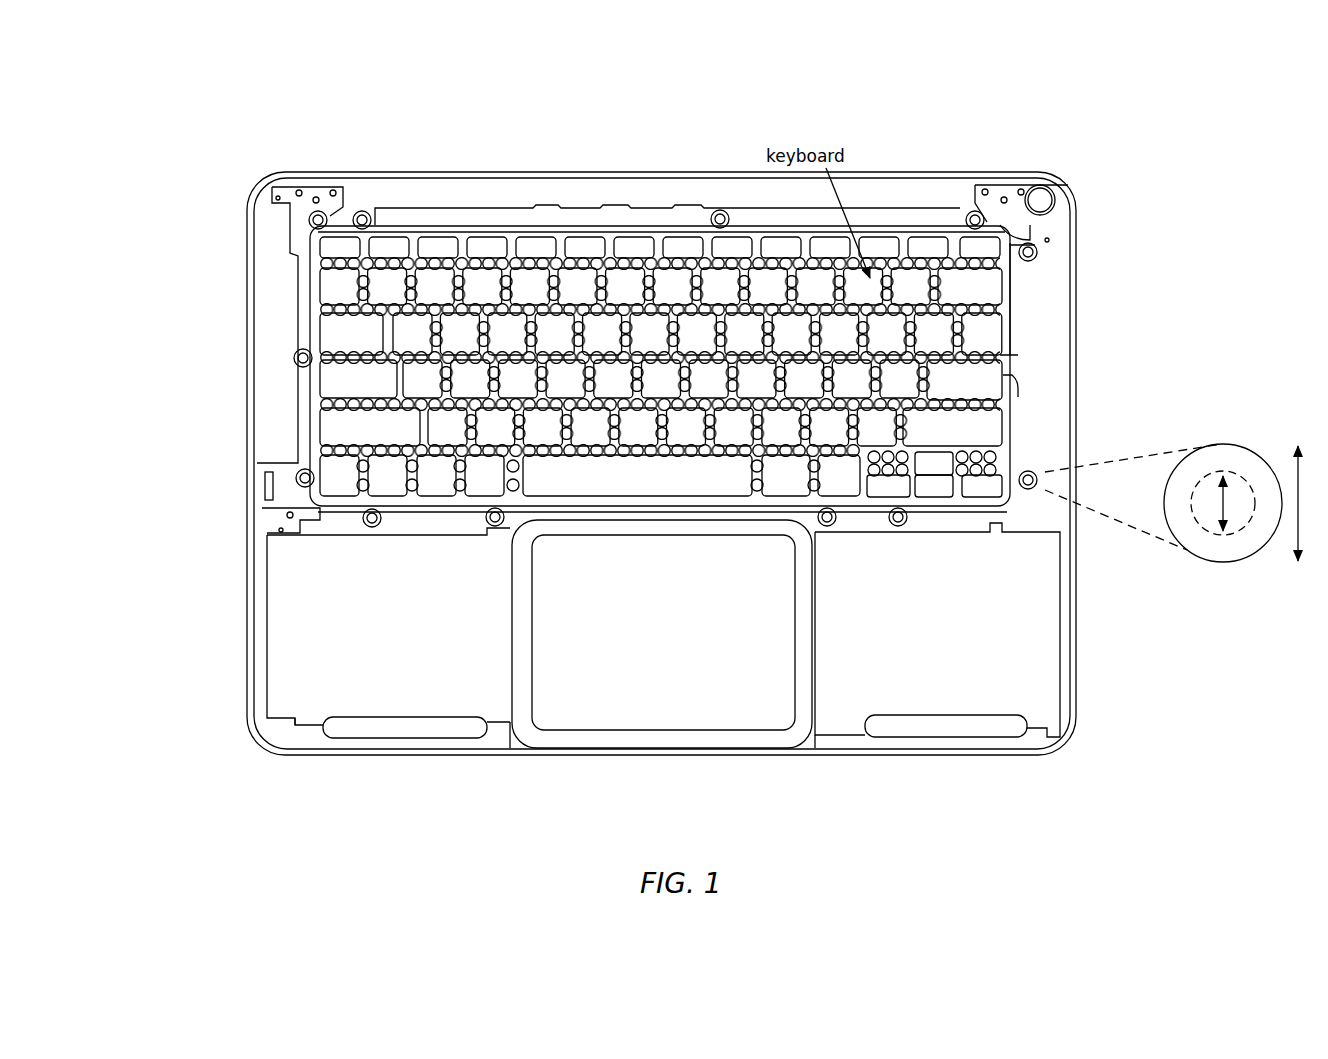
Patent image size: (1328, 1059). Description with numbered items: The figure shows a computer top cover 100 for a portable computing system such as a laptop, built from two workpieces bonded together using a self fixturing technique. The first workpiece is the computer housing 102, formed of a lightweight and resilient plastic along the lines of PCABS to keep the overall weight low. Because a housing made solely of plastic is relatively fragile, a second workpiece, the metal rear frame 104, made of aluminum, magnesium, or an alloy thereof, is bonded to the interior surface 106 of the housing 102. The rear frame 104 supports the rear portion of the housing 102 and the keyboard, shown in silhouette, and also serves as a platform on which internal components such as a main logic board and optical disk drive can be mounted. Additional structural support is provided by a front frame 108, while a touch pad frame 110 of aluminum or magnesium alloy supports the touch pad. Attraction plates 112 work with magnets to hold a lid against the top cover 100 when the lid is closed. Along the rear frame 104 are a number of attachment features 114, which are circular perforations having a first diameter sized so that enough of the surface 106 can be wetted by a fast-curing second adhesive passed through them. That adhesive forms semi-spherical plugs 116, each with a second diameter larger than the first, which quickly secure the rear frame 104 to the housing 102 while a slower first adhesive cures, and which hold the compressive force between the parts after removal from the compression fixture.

The computer top cover 100 is at (1156, 127).
The computer housing 102 is at (1078, 405).
The rear frame 104 is at (1048, 298).
The interior surface 106 is at (663, 630).
The front frame 108 is at (315, 737).
The touch pad frame 110 is at (536, 638).
The attraction plates 112 is at (430, 737).
The attachment features 114 is at (327, 214).
The plugs 116 is at (1226, 565).